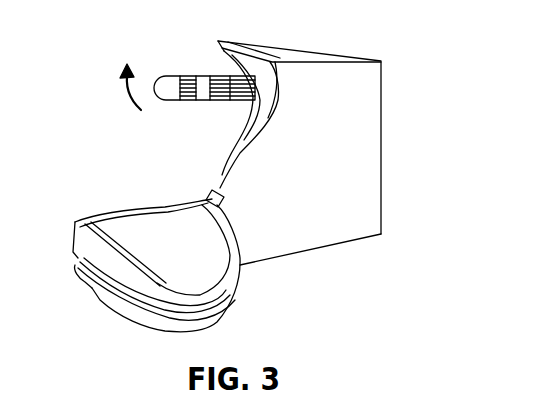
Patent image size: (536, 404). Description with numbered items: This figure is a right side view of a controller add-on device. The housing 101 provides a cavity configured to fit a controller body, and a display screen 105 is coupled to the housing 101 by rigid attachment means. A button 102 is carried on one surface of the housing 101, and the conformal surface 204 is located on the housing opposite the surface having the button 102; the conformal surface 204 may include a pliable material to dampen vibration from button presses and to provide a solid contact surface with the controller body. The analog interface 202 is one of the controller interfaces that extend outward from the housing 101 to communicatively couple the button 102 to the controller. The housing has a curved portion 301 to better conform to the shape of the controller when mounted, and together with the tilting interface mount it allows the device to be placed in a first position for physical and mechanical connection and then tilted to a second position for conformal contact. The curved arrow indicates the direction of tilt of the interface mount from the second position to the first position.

The housing 101 is at (370, 87).
The button 102 is at (127, 306).
The display screen 105 is at (325, 236).
The analog interface 202 is at (172, 77).
The conformal surface 204 is at (265, 92).
The curved portion 301 is at (226, 183).